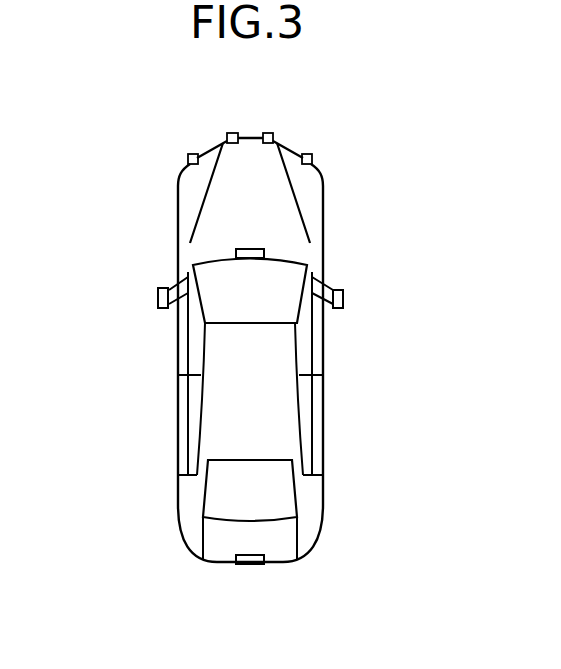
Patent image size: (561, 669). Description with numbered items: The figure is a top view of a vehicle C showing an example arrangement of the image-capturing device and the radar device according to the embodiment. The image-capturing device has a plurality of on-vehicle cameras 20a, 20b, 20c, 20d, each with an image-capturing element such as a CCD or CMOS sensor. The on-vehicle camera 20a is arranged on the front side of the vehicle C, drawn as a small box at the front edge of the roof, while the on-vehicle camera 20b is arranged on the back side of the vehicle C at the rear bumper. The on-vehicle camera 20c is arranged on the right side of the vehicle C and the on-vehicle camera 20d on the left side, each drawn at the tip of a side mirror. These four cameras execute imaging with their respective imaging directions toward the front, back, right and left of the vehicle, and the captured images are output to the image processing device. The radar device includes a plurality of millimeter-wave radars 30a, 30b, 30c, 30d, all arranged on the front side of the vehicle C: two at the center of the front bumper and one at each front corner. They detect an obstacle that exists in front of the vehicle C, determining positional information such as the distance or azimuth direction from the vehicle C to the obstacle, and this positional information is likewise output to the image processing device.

The vehicle C is at (323, 358).
The millimeter-wave radar 30a is at (312, 159).
The millimeter-wave radar 30b is at (188, 159).
The millimeter-wave radar 30c is at (273, 135).
The millimeter-wave radar 30d is at (227, 135).
The on-vehicle camera 20a is at (264, 252).
The on-vehicle camera 20b is at (247, 566).
The on-vehicle camera 20c is at (343, 298).
The on-vehicle camera 20d is at (158, 298).